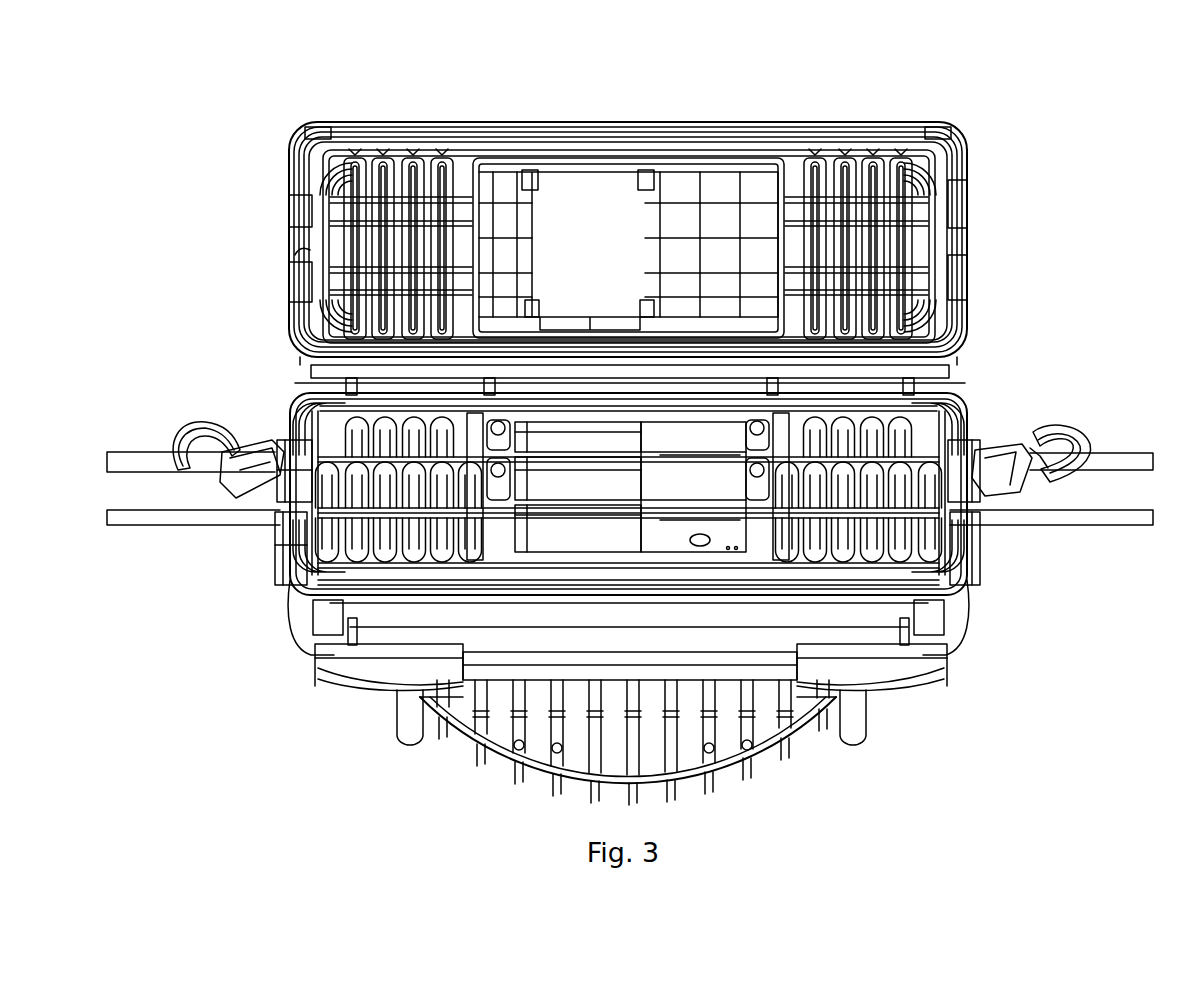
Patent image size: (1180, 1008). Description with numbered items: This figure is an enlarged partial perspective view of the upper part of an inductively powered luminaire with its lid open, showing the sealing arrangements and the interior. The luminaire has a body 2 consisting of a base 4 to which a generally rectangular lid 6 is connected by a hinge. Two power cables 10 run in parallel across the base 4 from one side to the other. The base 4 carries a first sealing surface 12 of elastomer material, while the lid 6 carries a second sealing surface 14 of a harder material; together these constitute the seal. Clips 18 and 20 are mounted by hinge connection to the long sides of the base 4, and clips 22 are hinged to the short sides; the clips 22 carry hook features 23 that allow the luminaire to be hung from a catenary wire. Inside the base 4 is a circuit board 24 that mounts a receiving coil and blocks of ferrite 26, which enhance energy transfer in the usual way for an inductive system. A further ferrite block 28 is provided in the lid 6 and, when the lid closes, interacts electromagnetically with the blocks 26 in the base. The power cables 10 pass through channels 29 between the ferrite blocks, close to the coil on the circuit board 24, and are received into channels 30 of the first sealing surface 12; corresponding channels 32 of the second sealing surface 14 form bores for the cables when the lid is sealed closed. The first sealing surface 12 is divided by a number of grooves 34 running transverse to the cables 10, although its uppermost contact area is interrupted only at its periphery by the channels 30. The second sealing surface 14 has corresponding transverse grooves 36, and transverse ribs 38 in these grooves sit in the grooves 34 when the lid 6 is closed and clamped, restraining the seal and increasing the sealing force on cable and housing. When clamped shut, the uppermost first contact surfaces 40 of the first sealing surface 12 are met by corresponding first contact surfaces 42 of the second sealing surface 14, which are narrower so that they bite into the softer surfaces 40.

The body 2 is at (142, 304).
The base 4 is at (292, 625).
The lid 6 is at (637, 127).
The power cables 10 is at (110, 452).
The first sealing surface 12 is at (963, 423).
The second sealing surface 14 is at (880, 165).
The clip 18 is at (312, 383).
The clip 20 is at (318, 674).
The clips 22 is at (208, 432).
The hook features 23 is at (1045, 432).
The circuit board 24 is at (654, 501).
The blocks of ferrite 26 is at (571, 447).
The ferrite block 28 is at (569, 260).
The channels 29 is at (643, 518).
The channels 30 is at (260, 440).
The channels 32 is at (265, 206).
The grooves 34 is at (390, 575).
The grooves 36 is at (351, 162).
The ribs 38 is at (384, 164).
The first contact surfaces 40 is at (332, 540).
The first contact surfaces 42 is at (302, 150).